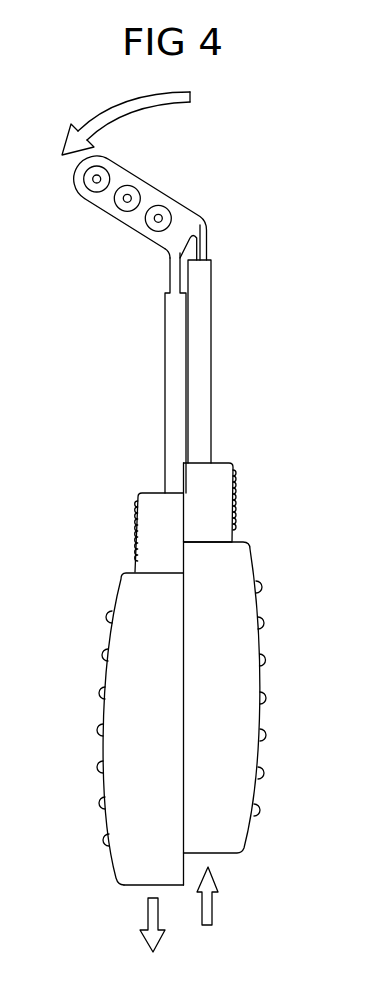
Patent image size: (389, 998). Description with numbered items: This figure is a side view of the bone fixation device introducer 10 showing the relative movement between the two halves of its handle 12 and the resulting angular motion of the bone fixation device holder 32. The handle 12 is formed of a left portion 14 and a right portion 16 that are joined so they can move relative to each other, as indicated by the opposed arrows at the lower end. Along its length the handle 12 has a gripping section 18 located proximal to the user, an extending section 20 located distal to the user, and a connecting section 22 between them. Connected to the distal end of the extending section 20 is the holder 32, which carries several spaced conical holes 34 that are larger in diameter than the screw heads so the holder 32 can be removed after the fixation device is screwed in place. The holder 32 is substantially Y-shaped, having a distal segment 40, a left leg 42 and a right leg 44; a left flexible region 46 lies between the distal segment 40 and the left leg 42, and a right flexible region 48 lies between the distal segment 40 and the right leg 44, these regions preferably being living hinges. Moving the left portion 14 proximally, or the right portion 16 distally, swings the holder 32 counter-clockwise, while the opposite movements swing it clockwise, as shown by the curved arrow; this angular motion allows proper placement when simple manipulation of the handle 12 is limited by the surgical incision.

The bone fixation device introducer 10 is at (210, 423).
The handle 12 is at (108, 582).
The left portion 14 is at (117, 885).
The right portion 16 is at (243, 855).
The gripping section 18 is at (257, 608).
The extending section 20 is at (200, 360).
The connecting section 22 is at (153, 505).
The bone fixation device holder 32 is at (122, 209).
The holes 34 is at (102, 213).
The distal segment 40 is at (152, 195).
The left leg 42 is at (173, 273).
The right leg 44 is at (203, 247).
The left flexible region 46 is at (173, 253).
The right flexible region 48 is at (197, 227).